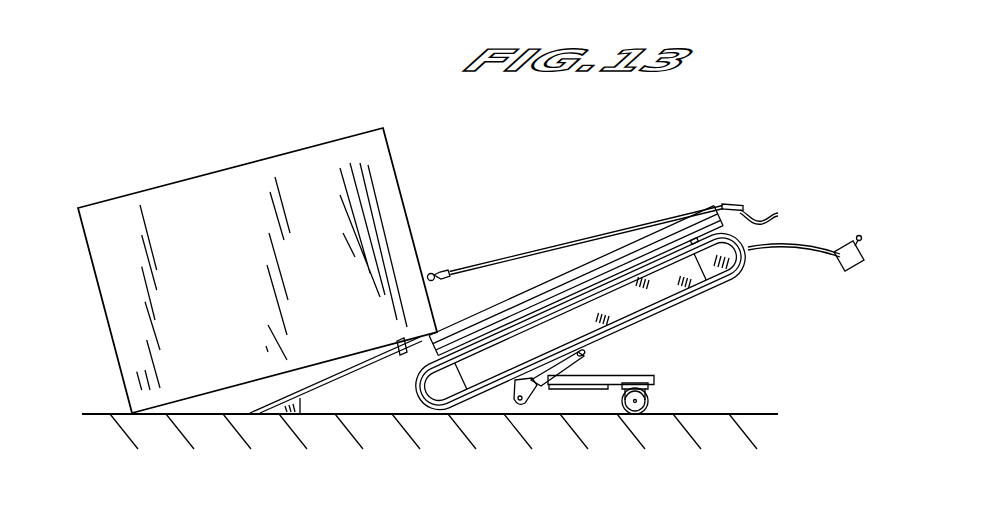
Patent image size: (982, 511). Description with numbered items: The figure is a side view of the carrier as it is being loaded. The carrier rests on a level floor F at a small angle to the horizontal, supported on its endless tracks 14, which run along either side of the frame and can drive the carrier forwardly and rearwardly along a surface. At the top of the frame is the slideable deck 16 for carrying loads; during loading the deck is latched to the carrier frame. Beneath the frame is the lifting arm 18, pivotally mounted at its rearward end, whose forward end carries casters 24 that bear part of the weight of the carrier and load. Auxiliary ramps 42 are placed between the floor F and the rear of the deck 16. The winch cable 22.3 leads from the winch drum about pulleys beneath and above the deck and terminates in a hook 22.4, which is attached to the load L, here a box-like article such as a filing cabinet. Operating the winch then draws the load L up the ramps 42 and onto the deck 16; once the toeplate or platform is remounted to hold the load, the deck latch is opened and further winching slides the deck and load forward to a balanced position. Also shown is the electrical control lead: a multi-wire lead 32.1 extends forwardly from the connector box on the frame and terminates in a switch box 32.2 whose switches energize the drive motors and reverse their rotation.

The endless tracks 14 is at (587, 308).
The deck 16 is at (486, 304).
The lifting arm 18 is at (620, 374).
The casters 24 is at (652, 402).
The cable 22.3 is at (563, 245).
The hook 22.4 is at (433, 266).
The multi-wire lead 32.1 is at (822, 216).
The switch box 32.2 is at (842, 262).
The auxiliary ramps 42 is at (322, 382).
The load L is at (244, 298).
The floor F is at (698, 413).